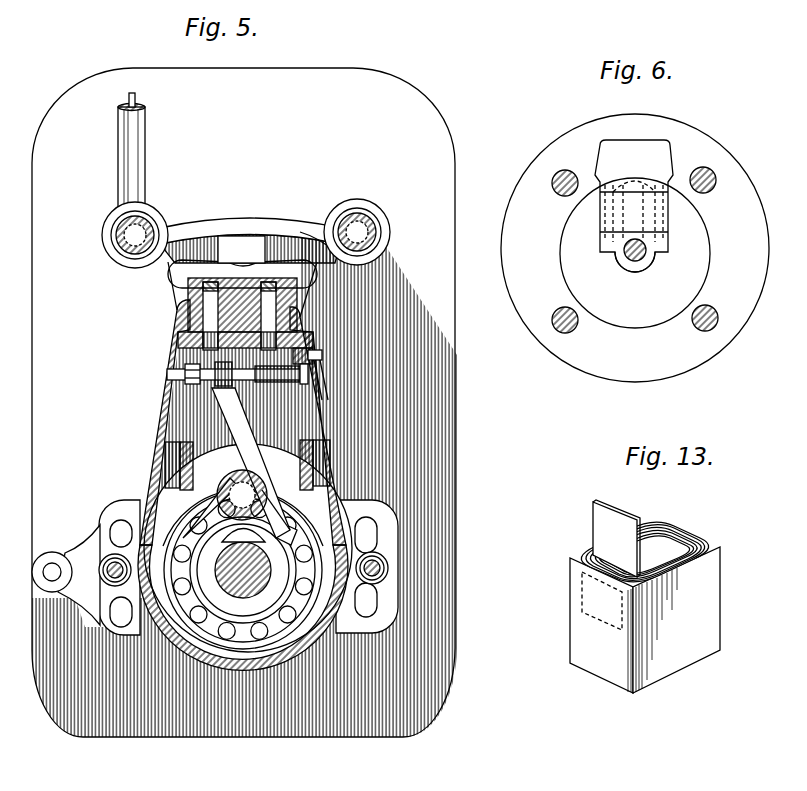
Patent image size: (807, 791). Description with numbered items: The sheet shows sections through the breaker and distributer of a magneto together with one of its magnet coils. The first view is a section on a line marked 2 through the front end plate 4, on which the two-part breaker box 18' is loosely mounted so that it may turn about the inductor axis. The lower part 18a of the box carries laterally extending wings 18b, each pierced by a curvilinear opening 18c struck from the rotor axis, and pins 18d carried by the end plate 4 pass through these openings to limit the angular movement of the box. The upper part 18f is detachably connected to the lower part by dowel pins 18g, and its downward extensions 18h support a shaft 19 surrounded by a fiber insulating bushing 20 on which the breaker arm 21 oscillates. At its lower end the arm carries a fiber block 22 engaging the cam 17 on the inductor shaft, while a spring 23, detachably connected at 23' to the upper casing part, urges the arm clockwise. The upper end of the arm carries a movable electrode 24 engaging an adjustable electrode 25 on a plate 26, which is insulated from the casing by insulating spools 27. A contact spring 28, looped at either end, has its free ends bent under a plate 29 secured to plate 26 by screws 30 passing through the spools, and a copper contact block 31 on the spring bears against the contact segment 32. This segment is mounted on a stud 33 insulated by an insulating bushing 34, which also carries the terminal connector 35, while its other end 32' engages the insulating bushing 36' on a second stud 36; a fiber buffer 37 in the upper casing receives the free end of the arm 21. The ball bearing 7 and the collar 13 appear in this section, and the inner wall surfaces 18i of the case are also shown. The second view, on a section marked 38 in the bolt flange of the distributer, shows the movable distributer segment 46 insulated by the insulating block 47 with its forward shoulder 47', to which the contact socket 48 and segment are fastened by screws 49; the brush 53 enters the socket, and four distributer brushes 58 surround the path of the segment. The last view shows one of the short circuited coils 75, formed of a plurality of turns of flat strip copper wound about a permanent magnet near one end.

In FIG. 5, the section line 2 is at (242, 195).
In FIG. 5, the end plate 4 is at (438, 138).
In FIG. 5, the ball bearing 7 is at (262, 627).
In FIG. 5, the collar 13 is at (325, 383).
In FIG. 5, the cam 17 is at (252, 597).
In FIG. 5, the two-part breaker box 18' is at (154, 422).
In FIG. 5, the lower part of breaker box 18a is at (103, 557).
In FIG. 5, the wings 18b is at (383, 510).
In FIG. 5, the curvilinear opening 18c is at (370, 613).
In FIG. 5, the pins 18d is at (393, 567).
In FIG. 5, the upper part of breaker box 18f is at (182, 366).
In FIG. 5, the dowel pins 18g is at (312, 473).
In FIG. 5, the downward extensions 18h is at (277, 487).
In FIG. 5, the crank chamber wall 18i is at (292, 440).
In FIG. 5, the shaft 19 is at (244, 485).
In FIG. 5, the fiber insulating bushing 20 is at (243, 533).
In FIG. 5, the breaker arm 21 is at (230, 435).
In FIG. 5, the fiber block 22 is at (293, 543).
In FIG. 5, the spring 23 is at (295, 400).
In FIG. 5, the spring connection 23' is at (330, 426).
In FIG. 5, the movable electrode 24 is at (233, 382).
In FIG. 5, the adjustable electrode 25 is at (313, 372).
In FIG. 5, the plate 26 is at (313, 338).
In FIG. 5, the insulating spools 27 is at (188, 298).
In FIG. 5, the contact spring 28 is at (168, 280).
In FIG. 5, the plate 29 is at (298, 280).
In FIG. 5, the screws 30 is at (183, 320).
In FIG. 5, the copper contact block 31 is at (233, 250).
In FIG. 5, the contact segment 32 is at (250, 258).
In FIG. 5, the end of contact segment 32' is at (319, 220).
In FIG. 5, the stud 33 is at (118, 254).
In FIG. 5, the insulating bushing 34 is at (118, 231).
In FIG. 5, the terminal connector 35 is at (143, 176).
In FIG. 5, the stud 36 is at (373, 219).
In FIG. 5, the insulating bushing 36' is at (377, 232).
In FIG. 5, the fiber buffer 37 is at (207, 388).
In FIG. 6, the flange 38 is at (635, 248).
In FIG. 6, the movable distributer segment 46 is at (625, 143).
In FIG. 6, the insulating block 47 is at (677, 253).
In FIG. 6, the shoulder 47' is at (598, 214).
In FIG. 6, the contact socket 48 is at (618, 254).
In FIG. 6, the screws 49 is at (600, 218).
In FIG. 6, the brush 53 is at (635, 262).
In FIG. 6, the distributer brushes 58 is at (720, 305).
In FIG. 13, the short circuited coils 75 is at (693, 655).